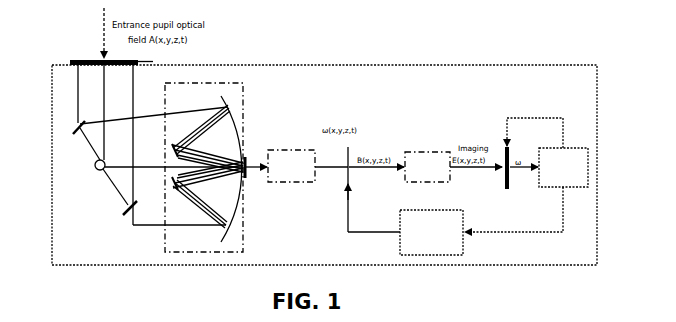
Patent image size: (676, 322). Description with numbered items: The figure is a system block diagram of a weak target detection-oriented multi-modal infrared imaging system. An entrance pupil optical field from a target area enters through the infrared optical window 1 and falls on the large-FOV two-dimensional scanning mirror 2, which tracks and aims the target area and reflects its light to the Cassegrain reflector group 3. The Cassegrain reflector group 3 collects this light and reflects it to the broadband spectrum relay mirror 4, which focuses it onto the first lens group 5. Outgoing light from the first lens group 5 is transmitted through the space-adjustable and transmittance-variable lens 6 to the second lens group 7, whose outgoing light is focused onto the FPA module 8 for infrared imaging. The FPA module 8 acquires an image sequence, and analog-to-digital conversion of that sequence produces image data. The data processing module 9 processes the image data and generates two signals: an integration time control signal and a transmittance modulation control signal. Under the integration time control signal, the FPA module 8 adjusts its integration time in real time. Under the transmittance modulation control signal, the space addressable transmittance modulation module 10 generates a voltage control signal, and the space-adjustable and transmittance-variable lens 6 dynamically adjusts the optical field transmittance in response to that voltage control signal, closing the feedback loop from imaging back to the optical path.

The infrared optical window 1 is at (73, 61).
The large-FOV two-dimensional scanning mirror 2 is at (97, 171).
The Cassegrain reflector group 3 is at (211, 82).
The broadband spectrum relay mirror 4 is at (248, 174).
The first lens group 5 is at (291, 166).
The space-adjustable and transmittance-variable lens 6 is at (349, 151).
The second lens group 7 is at (427, 167).
The FPA module 8 is at (505, 146).
The data processing module 9 is at (542, 141).
The space addressable transmittance modulation module 10 is at (481, 221).